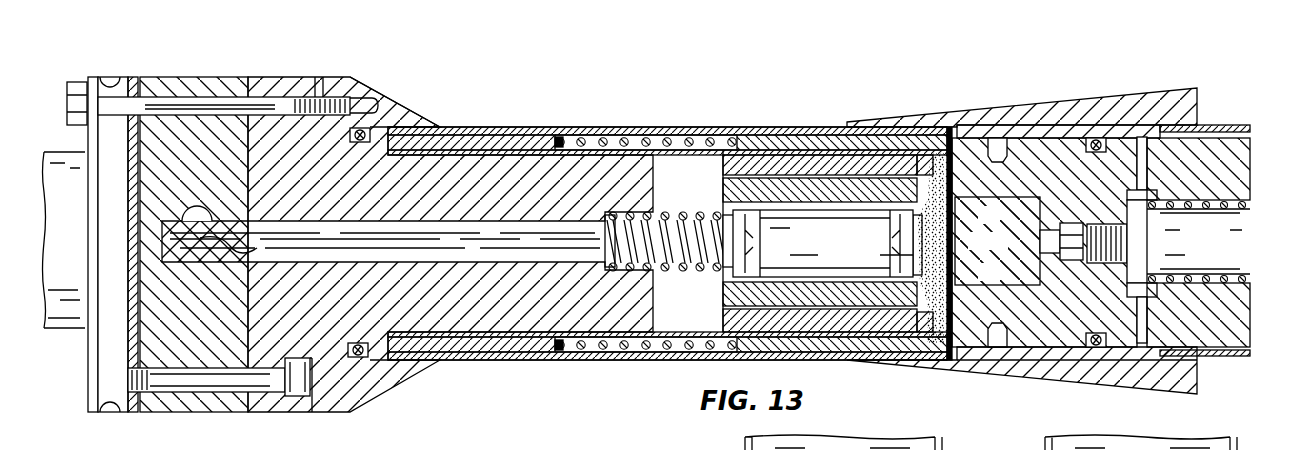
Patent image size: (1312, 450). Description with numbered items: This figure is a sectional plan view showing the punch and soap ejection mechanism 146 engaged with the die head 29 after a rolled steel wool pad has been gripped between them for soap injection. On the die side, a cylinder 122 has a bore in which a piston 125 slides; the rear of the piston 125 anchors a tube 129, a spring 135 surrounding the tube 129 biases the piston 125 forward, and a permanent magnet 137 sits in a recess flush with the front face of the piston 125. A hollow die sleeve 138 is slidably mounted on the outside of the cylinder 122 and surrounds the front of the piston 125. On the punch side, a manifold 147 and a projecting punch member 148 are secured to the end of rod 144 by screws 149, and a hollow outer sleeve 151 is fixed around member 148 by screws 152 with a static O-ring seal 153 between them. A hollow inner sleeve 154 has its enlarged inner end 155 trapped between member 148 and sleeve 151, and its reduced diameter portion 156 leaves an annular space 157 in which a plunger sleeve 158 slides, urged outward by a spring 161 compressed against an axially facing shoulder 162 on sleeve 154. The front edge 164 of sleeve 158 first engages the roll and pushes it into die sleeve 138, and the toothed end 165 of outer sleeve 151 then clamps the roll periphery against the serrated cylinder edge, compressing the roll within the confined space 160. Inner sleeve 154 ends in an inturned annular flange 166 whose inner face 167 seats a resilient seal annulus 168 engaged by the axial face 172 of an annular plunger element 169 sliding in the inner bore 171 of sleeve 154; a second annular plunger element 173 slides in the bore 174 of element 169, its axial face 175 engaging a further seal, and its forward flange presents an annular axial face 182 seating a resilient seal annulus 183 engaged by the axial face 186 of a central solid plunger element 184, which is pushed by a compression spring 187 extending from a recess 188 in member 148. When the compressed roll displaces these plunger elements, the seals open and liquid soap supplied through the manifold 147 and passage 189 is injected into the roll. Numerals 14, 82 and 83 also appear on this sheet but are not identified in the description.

The section line 14- 14 is at (150, 33).
The die head 29 is at (1100, 86).
The housing member 82 is at (938, 449).
The housing member 83 is at (1162, 442).
The cylinder 122 is at (1030, 128).
The piston 125 is at (1068, 342).
The tube 129 is at (1225, 243).
The spring 135 is at (1222, 205).
The permanent magnet 137 is at (1100, 162).
The die sleeve 138 is at (1177, 98).
The rod 144 is at (62, 322).
The punch and soap ejection mechanism 146 is at (446, 113).
The manifold 147 is at (213, 82).
The punch member 148 is at (303, 85).
The screws 149 is at (260, 385).
The outer sleeve 151 is at (470, 127).
The screws 152 is at (265, 97).
The static O-ring seal 153 is at (357, 355).
The inner sleeve 154 is at (504, 140).
The enlarged inner end 155 is at (390, 131).
The reduced diameter portion 156 is at (590, 143).
The annular space 157 is at (617, 139).
The plunger sleeve 158 is at (831, 149).
The confined space 160 is at (1044, 214).
The spring 161 is at (660, 129).
The axially facing shoulder 162 is at (568, 135).
The front edge 164 is at (955, 340).
The toothed end 165 is at (950, 150).
The inturned annular flange 166 is at (960, 127).
The axially facing inner face 167 is at (950, 309).
The resilient seal annulus 168 is at (920, 340).
The annular plunger element 169 is at (804, 166).
The inner bore 171 is at (837, 149).
The axial face 172 is at (905, 137).
The second annular plunger element 173 is at (795, 205).
The bore 174 is at (766, 169).
The axial face 175 is at (873, 205).
The annular axial face 182 is at (997, 241).
The resilient seal annulus 183 is at (938, 203).
The central solid plunger element 184 is at (828, 260).
The axial face 186 is at (900, 240).
The compression spring 187 is at (680, 216).
The recess 188 is at (648, 222).
The passage 189 is at (515, 228).